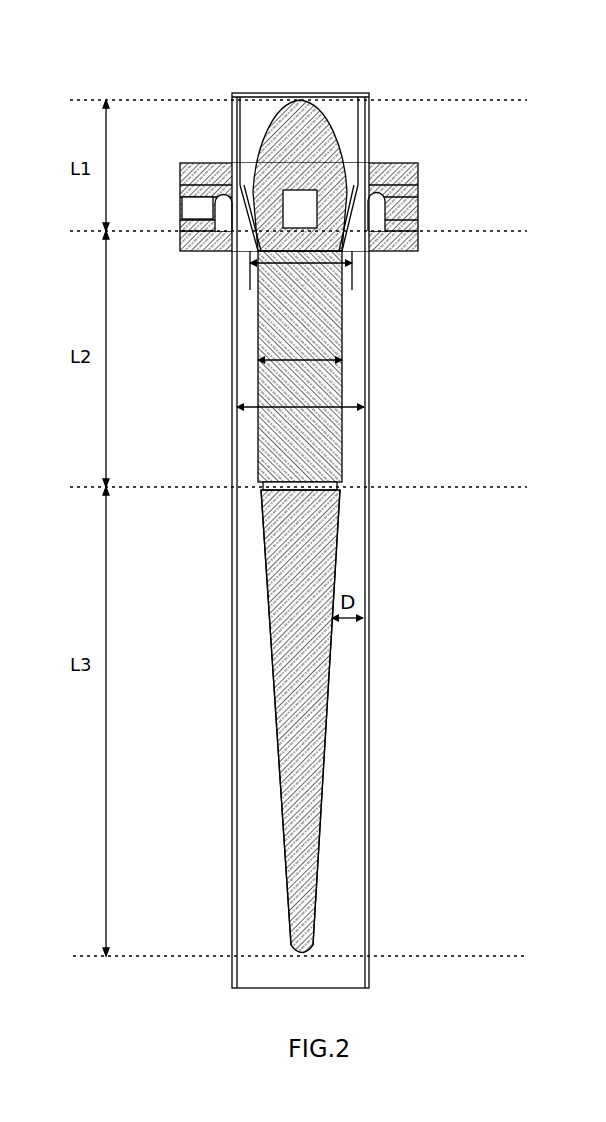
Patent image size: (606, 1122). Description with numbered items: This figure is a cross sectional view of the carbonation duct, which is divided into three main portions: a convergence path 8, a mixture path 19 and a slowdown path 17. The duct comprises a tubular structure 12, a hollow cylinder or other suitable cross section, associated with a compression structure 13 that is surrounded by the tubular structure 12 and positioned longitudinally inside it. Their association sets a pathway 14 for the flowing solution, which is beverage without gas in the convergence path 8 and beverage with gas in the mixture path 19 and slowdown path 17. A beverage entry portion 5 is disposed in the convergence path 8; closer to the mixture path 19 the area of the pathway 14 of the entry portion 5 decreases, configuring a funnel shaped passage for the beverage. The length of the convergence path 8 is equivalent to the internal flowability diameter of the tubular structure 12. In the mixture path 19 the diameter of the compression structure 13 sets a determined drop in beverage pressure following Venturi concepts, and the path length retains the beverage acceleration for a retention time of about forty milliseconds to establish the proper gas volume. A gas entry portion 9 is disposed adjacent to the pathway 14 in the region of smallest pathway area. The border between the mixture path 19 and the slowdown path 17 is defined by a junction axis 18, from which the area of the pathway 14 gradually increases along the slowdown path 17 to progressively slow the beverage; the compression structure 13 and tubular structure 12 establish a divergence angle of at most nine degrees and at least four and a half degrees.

The beverage entry portion 5 is at (299, 193).
The convergence path 8 is at (440, 180).
The gas entry portion 9 is at (300, 213).
The tubular structure 12 is at (370, 345).
The compression structure 13 is at (313, 125).
The pathway 14 is at (300, 706).
The slowdown path 17 is at (420, 720).
The junction axis 18 is at (296, 488).
The mixture path 19 is at (417, 407).